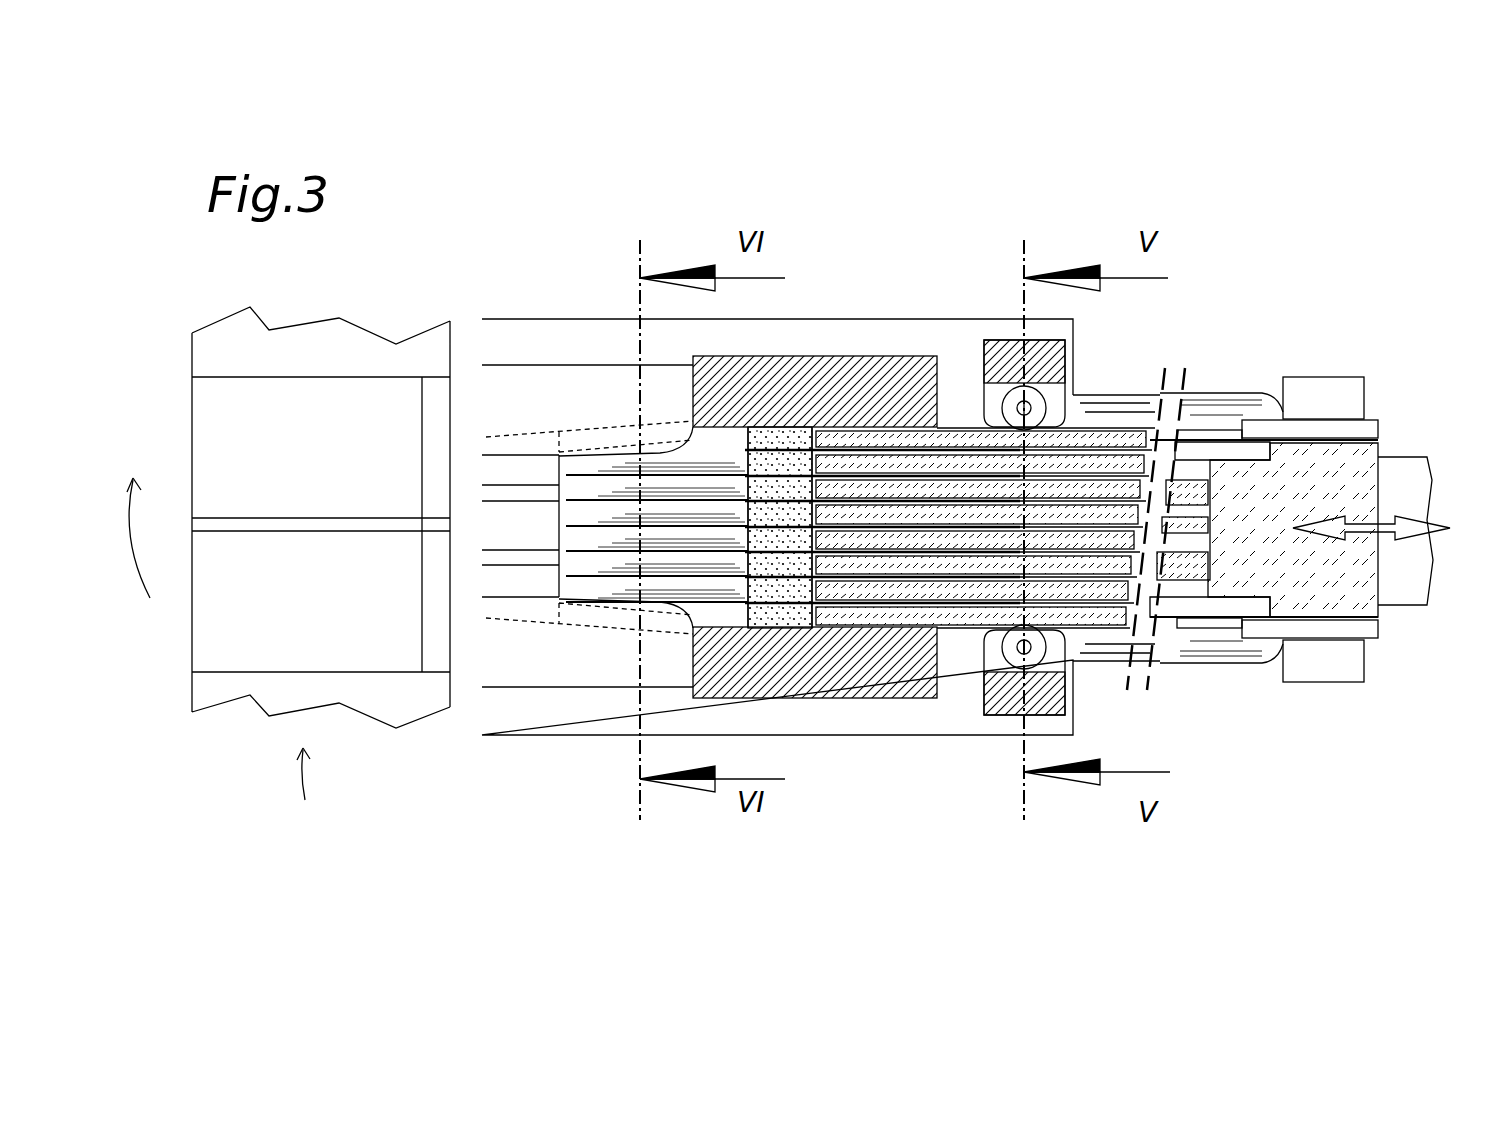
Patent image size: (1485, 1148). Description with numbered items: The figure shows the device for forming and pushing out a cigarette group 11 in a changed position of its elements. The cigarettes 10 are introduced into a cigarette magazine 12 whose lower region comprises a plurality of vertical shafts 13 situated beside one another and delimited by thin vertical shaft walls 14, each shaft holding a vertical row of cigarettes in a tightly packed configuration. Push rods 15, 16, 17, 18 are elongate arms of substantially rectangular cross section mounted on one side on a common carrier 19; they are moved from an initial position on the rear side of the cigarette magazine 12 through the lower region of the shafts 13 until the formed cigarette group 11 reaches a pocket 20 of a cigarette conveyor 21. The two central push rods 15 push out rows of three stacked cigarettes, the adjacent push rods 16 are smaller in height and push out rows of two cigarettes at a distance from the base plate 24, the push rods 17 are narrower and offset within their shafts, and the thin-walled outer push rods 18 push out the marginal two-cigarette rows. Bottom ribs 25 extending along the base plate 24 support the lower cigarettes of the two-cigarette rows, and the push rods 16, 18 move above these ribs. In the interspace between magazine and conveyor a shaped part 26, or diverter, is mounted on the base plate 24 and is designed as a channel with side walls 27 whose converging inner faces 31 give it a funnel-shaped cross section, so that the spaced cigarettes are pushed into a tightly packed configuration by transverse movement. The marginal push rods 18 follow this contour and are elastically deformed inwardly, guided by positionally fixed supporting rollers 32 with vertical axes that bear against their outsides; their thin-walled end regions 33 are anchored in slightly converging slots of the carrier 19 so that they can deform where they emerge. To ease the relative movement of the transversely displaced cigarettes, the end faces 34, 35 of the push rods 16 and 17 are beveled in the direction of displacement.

The cigarettes 10 is at (733, 432).
The cigarette group 11 is at (551, 526).
The cigarette magazine 12 is at (853, 231).
The vertical shafts 13 is at (960, 625).
The shaft walls 14 is at (835, 590).
The central push rods 15 is at (920, 510).
The push rods 16 is at (1070, 560).
The push rods 17 is at (1115, 470).
The outer push rods 18 is at (958, 430).
The carrier 19 is at (1345, 478).
The pocket 20 is at (215, 640).
The cigarette conveyor 21 is at (235, 664).
The base plate 24 is at (598, 730).
The bottom ribs 25 is at (500, 495).
The shaped part 26 is at (590, 332).
The side walls 27 is at (557, 372).
The converging inner faces 31 is at (518, 420).
The supporting rollers 32 is at (1010, 380).
The end regions 33 is at (1255, 433).
The end face 34 is at (818, 490).
The end face 35 is at (858, 515).